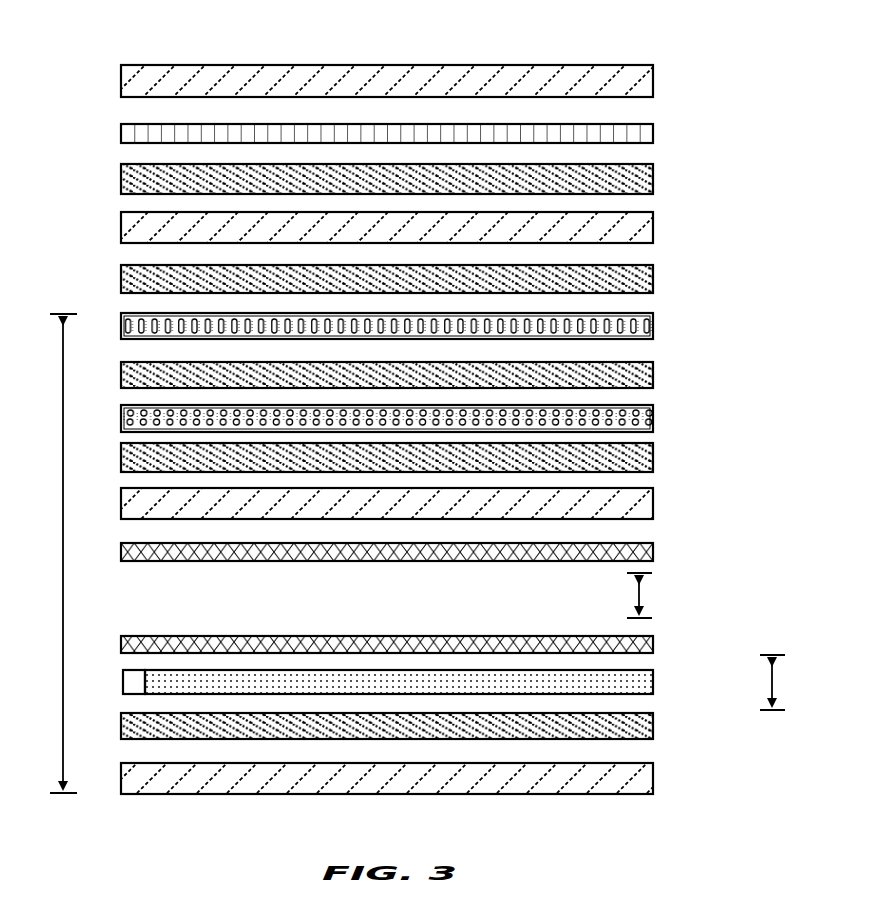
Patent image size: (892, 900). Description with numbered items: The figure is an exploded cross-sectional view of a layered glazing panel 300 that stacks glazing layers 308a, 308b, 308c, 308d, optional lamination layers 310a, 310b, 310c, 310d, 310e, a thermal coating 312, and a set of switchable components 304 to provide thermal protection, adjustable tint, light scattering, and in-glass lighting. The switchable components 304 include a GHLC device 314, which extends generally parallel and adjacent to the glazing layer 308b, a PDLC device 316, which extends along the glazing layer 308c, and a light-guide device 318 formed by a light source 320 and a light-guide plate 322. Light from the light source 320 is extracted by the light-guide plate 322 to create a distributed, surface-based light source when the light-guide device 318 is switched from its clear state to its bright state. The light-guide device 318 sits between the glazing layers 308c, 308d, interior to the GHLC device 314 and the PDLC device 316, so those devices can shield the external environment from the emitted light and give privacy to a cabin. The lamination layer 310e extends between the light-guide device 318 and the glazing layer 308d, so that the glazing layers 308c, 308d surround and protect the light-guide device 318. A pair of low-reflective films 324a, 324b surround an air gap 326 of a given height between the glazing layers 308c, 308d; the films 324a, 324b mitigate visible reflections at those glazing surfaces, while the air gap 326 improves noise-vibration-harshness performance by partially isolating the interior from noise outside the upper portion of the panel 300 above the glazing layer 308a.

The panel 300 is at (108, 55).
The switchable components 304 is at (57, 313).
The glazing layer 308a is at (653, 75).
The glazing layer 308b is at (653, 227).
The glazing layer 308c is at (653, 503).
The glazing layer 308d is at (653, 778).
The lamination layer 310a is at (653, 177).
The lamination layer 310b is at (653, 280).
The lamination layer 310c is at (653, 375).
The lamination layer 310d is at (653, 457).
The lamination layer 310e is at (653, 726).
The thermal coating 312 is at (653, 130).
The GHLC device 314 is at (653, 326).
The PDLC device 316 is at (653, 419).
The light-guide device 318 is at (780, 656).
The light source 320 is at (123, 673).
The light-guide plate 322 is at (653, 682).
The low-reflective film 324a is at (653, 552).
The low-reflective film 324b is at (653, 644).
The air gap 326 is at (650, 575).